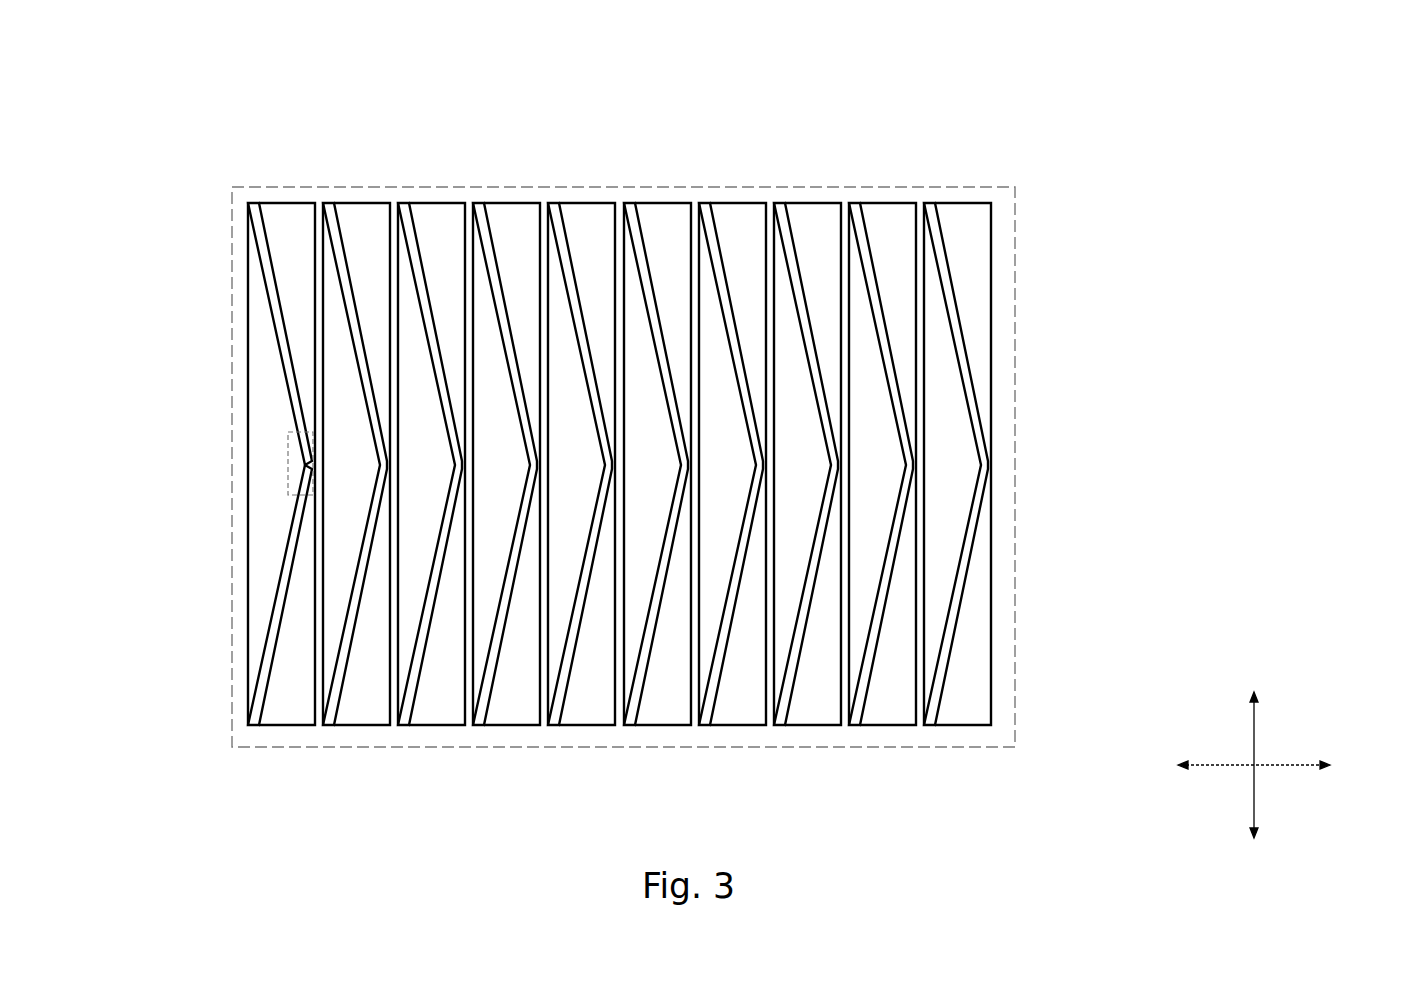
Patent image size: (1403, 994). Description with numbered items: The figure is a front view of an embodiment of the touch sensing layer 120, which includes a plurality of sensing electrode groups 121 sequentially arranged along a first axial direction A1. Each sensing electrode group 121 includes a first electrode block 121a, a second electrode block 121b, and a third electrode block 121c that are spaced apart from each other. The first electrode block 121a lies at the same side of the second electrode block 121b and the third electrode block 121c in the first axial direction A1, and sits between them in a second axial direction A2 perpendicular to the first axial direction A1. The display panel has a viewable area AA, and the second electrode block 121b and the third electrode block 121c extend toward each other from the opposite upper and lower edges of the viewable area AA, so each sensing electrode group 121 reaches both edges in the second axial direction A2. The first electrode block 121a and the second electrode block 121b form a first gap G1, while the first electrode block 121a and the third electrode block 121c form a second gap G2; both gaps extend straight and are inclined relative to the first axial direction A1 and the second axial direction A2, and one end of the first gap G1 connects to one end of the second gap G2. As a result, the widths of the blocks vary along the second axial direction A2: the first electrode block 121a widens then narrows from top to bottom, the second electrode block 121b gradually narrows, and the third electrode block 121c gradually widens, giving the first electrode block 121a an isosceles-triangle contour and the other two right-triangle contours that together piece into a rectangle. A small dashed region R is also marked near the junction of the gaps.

The touch sensing layer 120 is at (178, 65).
The viewable area AA is at (664, 187).
The sensing electrode group 121 is at (221, 467).
The first electrode block 121a is at (268, 448).
The second electrode block 121b is at (312, 375).
The third electrode block 121c is at (310, 523).
The first gap G1 is at (286, 318).
The second gap G2 is at (289, 609).
The region R is at (315, 495).
The first axial direction A1 is at (1253, 767).
The second axial direction A2 is at (1255, 768).